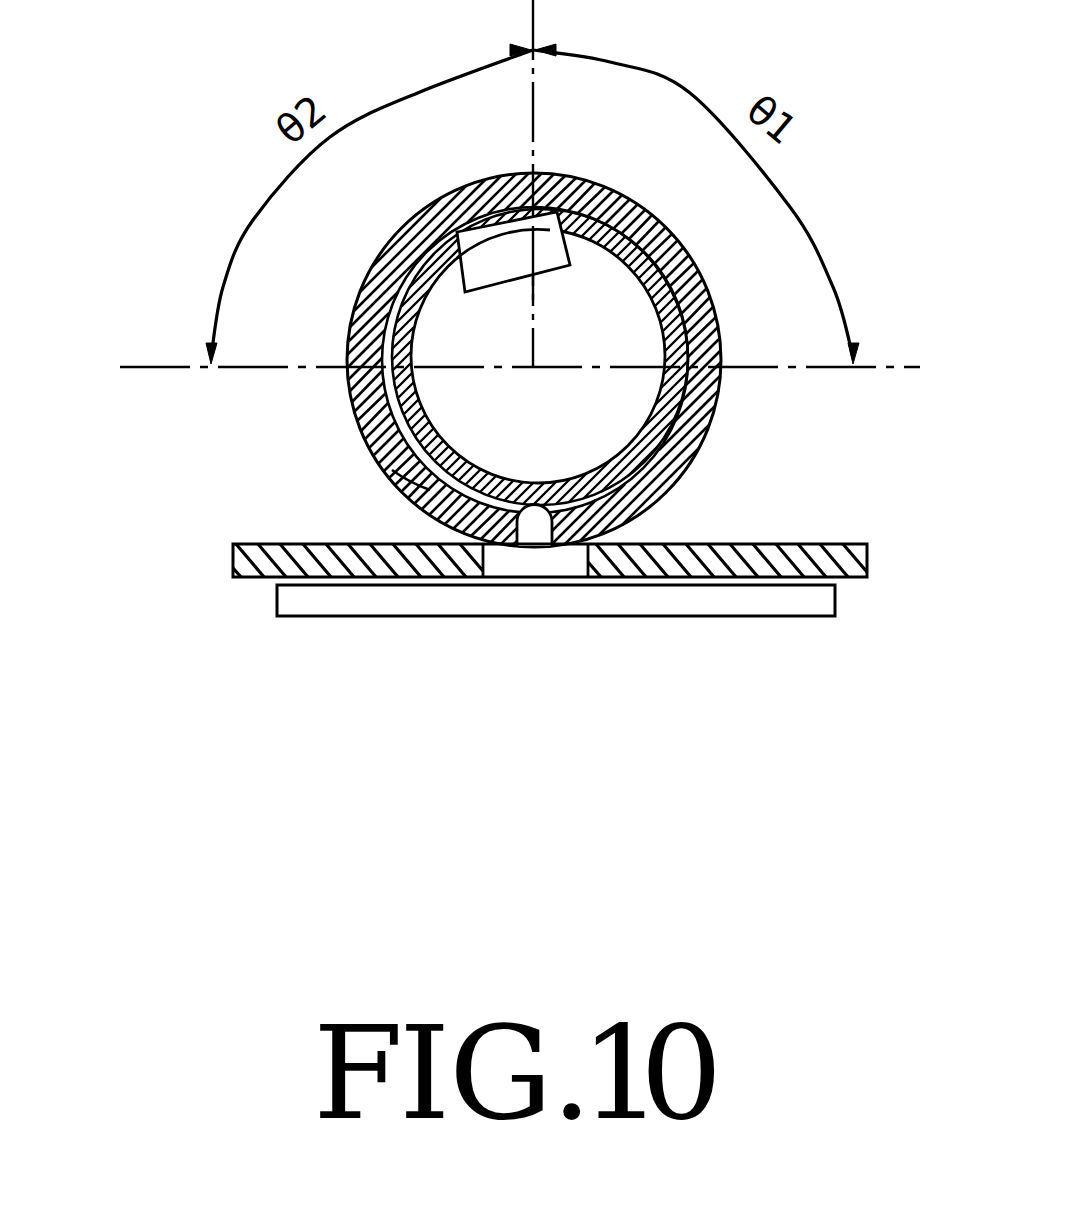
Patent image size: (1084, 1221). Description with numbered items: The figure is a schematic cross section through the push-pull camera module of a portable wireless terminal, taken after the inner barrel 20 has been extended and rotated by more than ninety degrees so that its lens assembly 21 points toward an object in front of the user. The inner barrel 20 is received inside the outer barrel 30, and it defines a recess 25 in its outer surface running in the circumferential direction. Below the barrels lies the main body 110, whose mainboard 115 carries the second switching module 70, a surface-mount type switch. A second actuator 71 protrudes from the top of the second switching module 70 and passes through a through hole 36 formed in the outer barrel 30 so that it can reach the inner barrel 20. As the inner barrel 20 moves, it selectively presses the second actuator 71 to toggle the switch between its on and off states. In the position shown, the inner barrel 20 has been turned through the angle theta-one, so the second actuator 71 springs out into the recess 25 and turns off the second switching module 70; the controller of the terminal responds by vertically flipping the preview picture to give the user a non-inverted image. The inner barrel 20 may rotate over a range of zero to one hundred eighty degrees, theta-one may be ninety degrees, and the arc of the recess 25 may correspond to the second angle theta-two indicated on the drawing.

The inner barrel 20 is at (720, 408).
The lens assembly 21 is at (557, 212).
The recess 25 is at (393, 481).
The outer barrel 30 is at (343, 395).
The through hole 36 is at (633, 520).
The second switching module 70 is at (570, 568).
The second actuator 71 is at (527, 533).
The main body 110 is at (465, 625).
The mainboard 115 is at (392, 617).